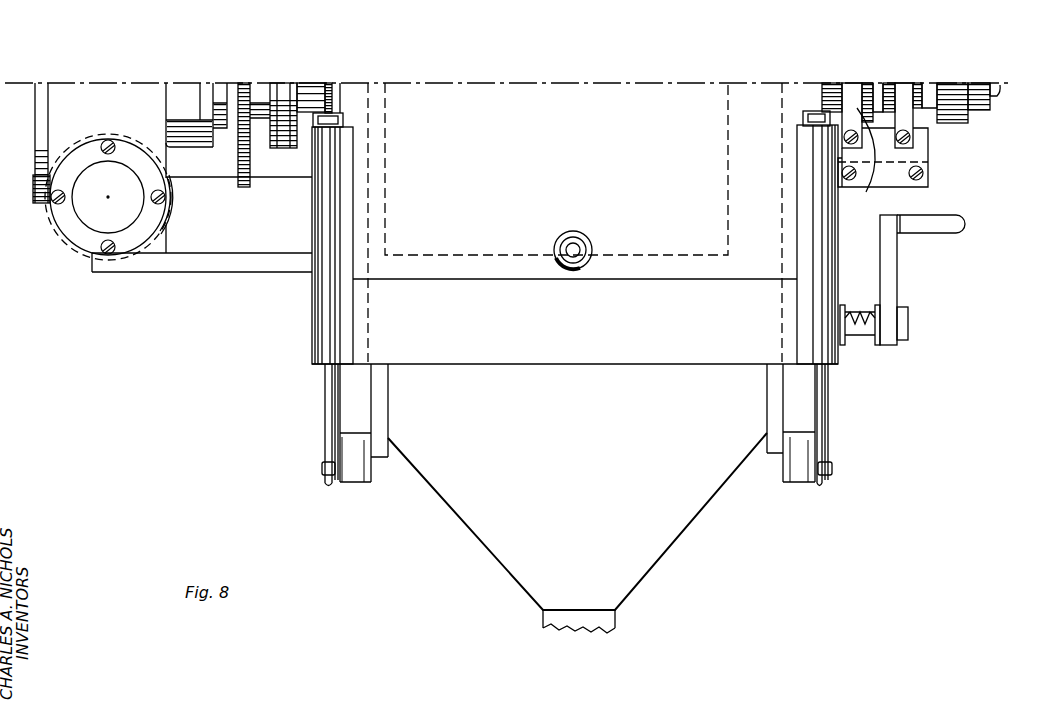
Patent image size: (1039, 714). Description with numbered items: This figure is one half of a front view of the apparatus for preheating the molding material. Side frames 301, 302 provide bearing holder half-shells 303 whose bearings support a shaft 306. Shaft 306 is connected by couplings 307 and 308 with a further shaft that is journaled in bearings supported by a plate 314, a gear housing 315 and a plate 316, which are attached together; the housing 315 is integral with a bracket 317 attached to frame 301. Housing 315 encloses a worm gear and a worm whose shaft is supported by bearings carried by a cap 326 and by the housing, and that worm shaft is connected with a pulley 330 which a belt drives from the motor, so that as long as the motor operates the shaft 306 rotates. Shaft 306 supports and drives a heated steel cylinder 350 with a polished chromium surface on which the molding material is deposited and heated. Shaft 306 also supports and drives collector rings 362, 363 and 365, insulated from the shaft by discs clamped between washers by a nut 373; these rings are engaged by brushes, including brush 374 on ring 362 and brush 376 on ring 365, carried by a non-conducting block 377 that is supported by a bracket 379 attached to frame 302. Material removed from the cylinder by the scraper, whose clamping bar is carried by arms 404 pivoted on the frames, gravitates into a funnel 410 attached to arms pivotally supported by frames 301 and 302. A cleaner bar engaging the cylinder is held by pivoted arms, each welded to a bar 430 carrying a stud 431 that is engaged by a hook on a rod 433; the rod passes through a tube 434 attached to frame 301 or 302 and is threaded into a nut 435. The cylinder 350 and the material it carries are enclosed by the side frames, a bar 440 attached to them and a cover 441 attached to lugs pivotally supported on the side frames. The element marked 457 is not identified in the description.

The plate 316 is at (44, 83).
The gear housing 315 is at (98, 85).
The plate 314 is at (188, 93).
The coupling 308 is at (277, 96).
The coupling 307 is at (298, 88).
The bearing holder half-shell 303 is at (345, 95).
The nut 435 is at (345, 121).
The frame 301 is at (370, 140).
The sprocket 457 is at (240, 184).
The bracket 317 is at (296, 181).
The pulley 330 is at (56, 236).
The cap 326 is at (82, 254).
The tube 434 is at (312, 320).
The rod 433 is at (325, 412).
The arm 404 is at (383, 414).
The stud 431 is at (323, 470).
The bar 430 is at (342, 484).
The bar 440 is at (668, 364).
The cover 441 is at (684, 274).
The funnel 410 is at (653, 574).
The heated steel cylinder 350 is at (720, 95).
The frame 302 is at (783, 139).
The collector ring 362 is at (865, 84).
The brush 376 is at (903, 84).
The collector ring 365 is at (918, 84).
The collector ring 363 is at (953, 84).
The nut 373 is at (985, 84).
The shaft 306 is at (995, 94).
The non-conducting block 377 is at (926, 147).
The bracket 379 is at (920, 158).
The brush 374 is at (873, 183).